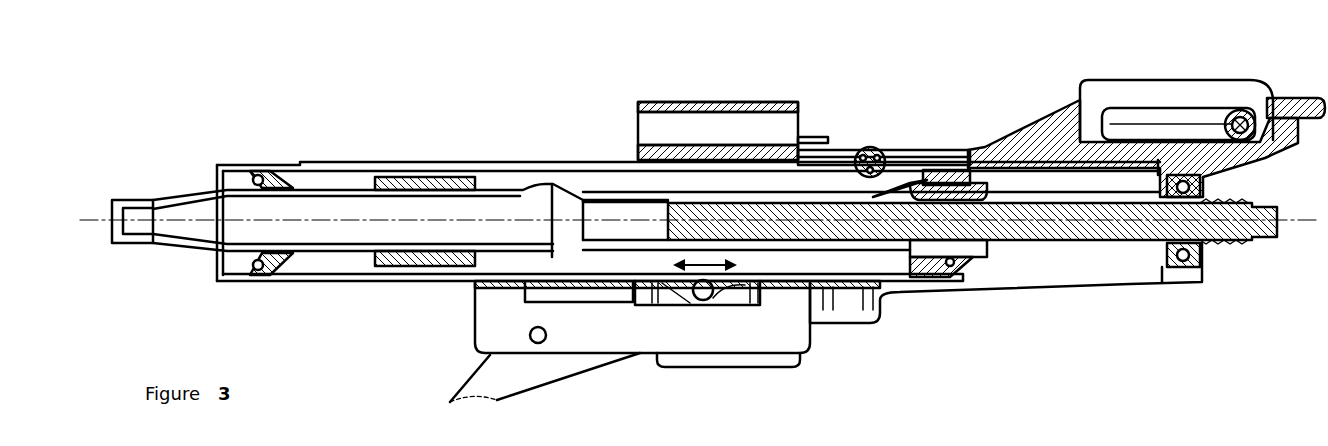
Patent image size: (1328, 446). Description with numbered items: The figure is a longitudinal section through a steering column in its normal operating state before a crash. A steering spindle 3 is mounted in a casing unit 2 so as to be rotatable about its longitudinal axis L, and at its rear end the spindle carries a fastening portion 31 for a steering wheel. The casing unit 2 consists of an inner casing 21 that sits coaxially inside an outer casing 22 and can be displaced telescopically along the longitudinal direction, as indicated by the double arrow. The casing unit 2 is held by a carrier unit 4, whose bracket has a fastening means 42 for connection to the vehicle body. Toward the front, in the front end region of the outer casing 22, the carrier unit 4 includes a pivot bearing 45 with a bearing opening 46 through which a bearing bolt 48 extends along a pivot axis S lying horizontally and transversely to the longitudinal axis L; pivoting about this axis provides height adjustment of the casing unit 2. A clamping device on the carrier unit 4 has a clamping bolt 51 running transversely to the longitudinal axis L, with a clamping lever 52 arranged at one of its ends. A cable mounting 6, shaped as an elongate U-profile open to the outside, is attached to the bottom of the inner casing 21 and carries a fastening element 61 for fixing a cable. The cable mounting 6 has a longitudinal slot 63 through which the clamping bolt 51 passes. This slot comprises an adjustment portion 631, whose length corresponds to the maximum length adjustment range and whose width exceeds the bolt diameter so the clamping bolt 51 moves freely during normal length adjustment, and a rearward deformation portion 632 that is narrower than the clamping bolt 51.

The longitudinal axis L is at (88, 213).
The casing unit 2 is at (921, 136).
The inner casing 21 is at (332, 160).
The outer casing 22 is at (1053, 268).
The steering spindle 3 is at (205, 200).
The fastening portion 31 is at (147, 197).
The carrier unit 4 is at (804, 117).
The fastening means 42 is at (693, 100).
The pivot bearing 45 is at (1130, 94).
The bearing opening 46 is at (1157, 120).
The pivot axis S is at (1208, 122).
The bearing bolt 48 is at (1247, 115).
The cable mounting 6 is at (677, 258).
The fastening element 61 is at (530, 342).
The longitudinal slot 63 is at (642, 258).
The adjustment portion 631 is at (698, 315).
The deformation portion 632 is at (525, 312).
The clamping bolt 51 is at (763, 293).
The clamping lever 52 is at (493, 378).